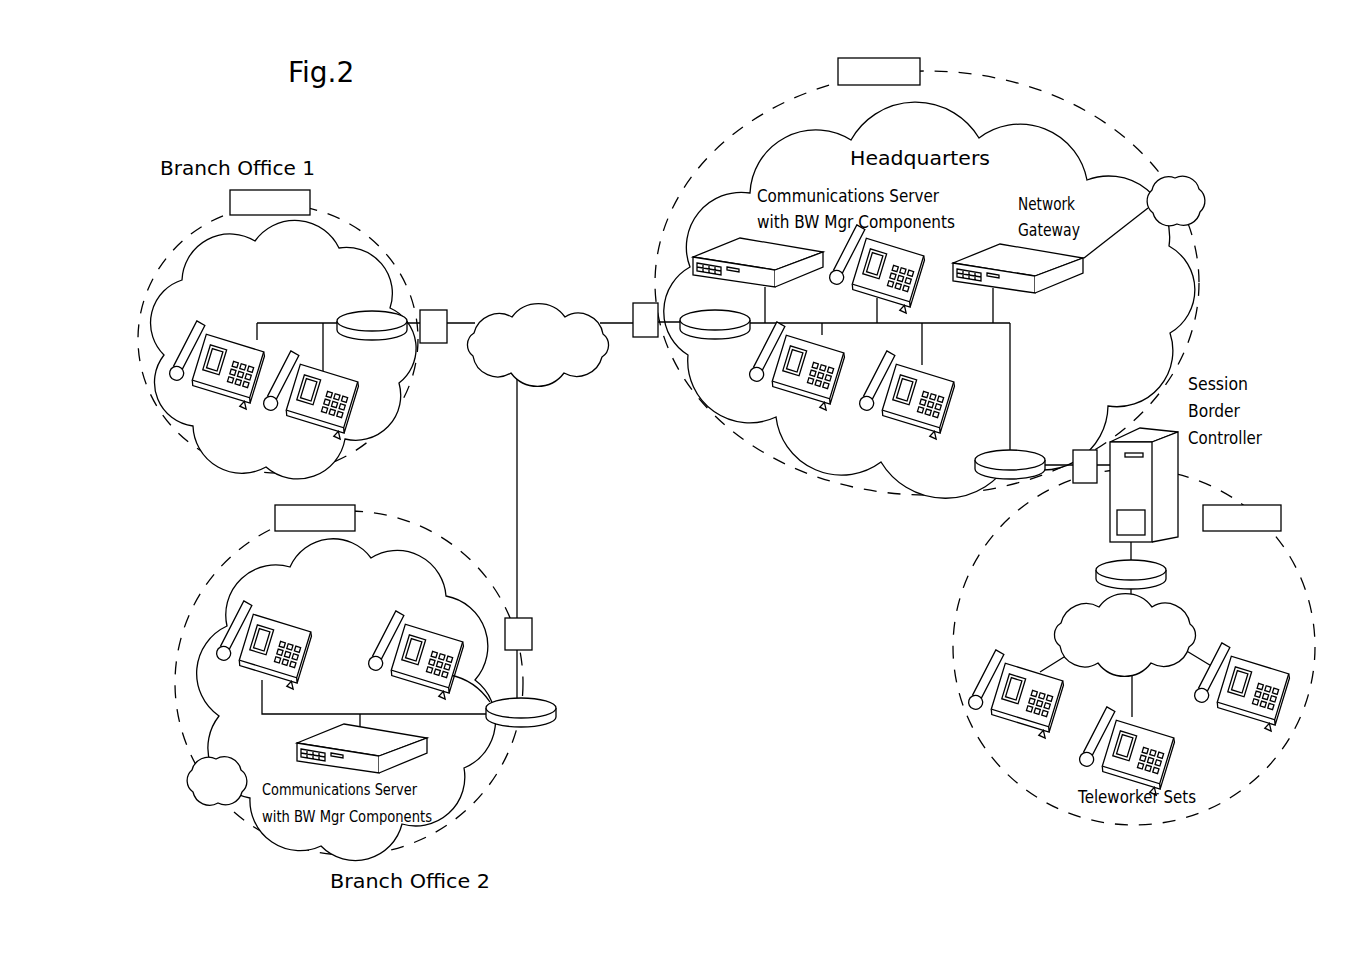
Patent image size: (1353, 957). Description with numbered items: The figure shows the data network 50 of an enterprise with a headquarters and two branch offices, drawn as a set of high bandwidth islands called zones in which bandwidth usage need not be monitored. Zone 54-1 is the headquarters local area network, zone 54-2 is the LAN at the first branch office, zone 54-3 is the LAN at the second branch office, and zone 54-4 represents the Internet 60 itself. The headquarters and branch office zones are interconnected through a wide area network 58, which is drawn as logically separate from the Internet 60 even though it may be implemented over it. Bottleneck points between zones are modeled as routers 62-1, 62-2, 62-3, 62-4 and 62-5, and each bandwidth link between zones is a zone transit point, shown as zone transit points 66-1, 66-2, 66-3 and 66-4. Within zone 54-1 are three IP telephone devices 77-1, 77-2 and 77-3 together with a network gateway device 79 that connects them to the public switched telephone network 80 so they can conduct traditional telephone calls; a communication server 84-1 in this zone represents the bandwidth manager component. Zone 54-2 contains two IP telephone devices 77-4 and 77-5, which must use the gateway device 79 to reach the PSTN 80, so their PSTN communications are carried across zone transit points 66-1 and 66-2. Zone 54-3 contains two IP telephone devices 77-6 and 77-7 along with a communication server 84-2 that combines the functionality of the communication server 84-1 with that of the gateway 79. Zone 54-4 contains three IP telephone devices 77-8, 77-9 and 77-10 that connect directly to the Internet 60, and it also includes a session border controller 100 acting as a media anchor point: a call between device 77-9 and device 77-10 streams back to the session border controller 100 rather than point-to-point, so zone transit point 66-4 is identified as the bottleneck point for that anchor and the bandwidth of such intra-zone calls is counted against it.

The data network 50 is at (1153, 100).
The zone 54-1 is at (1038, 88).
The zone 54-2 is at (342, 207).
The zone 54-3 is at (218, 558).
The zone 54-4 is at (1300, 572).
The wide area network 58 is at (542, 312).
The Internet 60 is at (1063, 625).
The router 62-1 is at (692, 311).
The router 62-2 is at (383, 310).
The router 62-3 is at (552, 700).
The router 62-4 is at (1098, 565).
The router 62-5 is at (985, 470).
The zone transit point 66-1 is at (647, 340).
The zone transit point 66-2 is at (438, 308).
The zone transit point 66-3 is at (537, 633).
The zone transit point 66-4 is at (1068, 478).
The IP telephone device 77-1 is at (946, 370).
The IP telephone device 77-2 is at (808, 403).
The IP telephone device 77-3 is at (930, 258).
The IP telephone device 77-4 is at (230, 337).
The IP telephone device 77-5 is at (362, 398).
The IP telephone device 77-6 is at (302, 630).
The IP telephone device 77-7 is at (398, 640).
The IP telephone device 77-8 is at (1265, 658).
The IP telephone device 77-9 is at (993, 678).
The IP telephone device 77-10 is at (1100, 743).
The network gateway device 79 is at (1062, 295).
The public switched telephone network 80 is at (1190, 183).
The communication server 84-1 is at (708, 247).
The communication server 84-2 is at (440, 748).
The session border controller 100 is at (1187, 462).